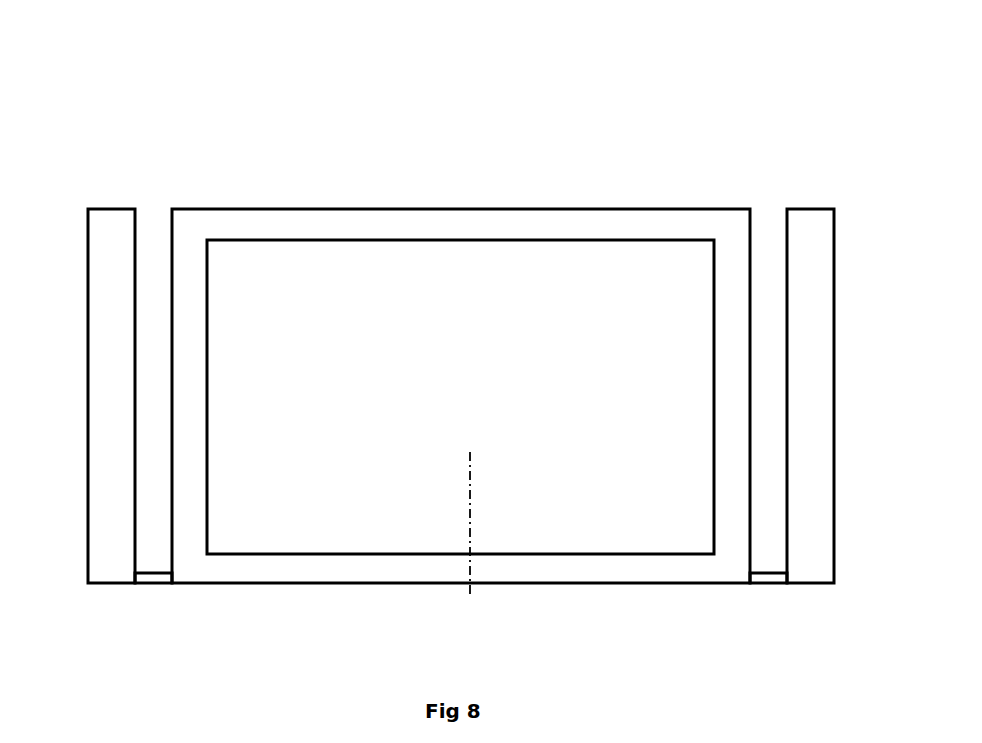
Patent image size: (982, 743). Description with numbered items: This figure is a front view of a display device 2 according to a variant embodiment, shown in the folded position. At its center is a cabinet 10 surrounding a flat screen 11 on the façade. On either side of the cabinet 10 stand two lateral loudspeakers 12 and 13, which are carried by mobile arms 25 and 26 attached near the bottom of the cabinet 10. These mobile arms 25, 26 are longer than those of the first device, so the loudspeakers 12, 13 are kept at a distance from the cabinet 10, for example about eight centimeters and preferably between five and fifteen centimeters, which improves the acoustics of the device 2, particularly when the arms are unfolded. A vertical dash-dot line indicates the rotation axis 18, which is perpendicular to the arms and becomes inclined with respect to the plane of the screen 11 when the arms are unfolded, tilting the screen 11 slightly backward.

The display device 2 is at (238, 182).
The cabinet 10 is at (488, 215).
The flat screen 11 is at (608, 250).
The lateral loudspeaker 12 is at (88, 438).
The lateral loudspeaker 13 is at (808, 230).
The rotation axis 18 is at (470, 480).
The mobile arm 25 is at (160, 580).
The mobile arm 26 is at (772, 580).